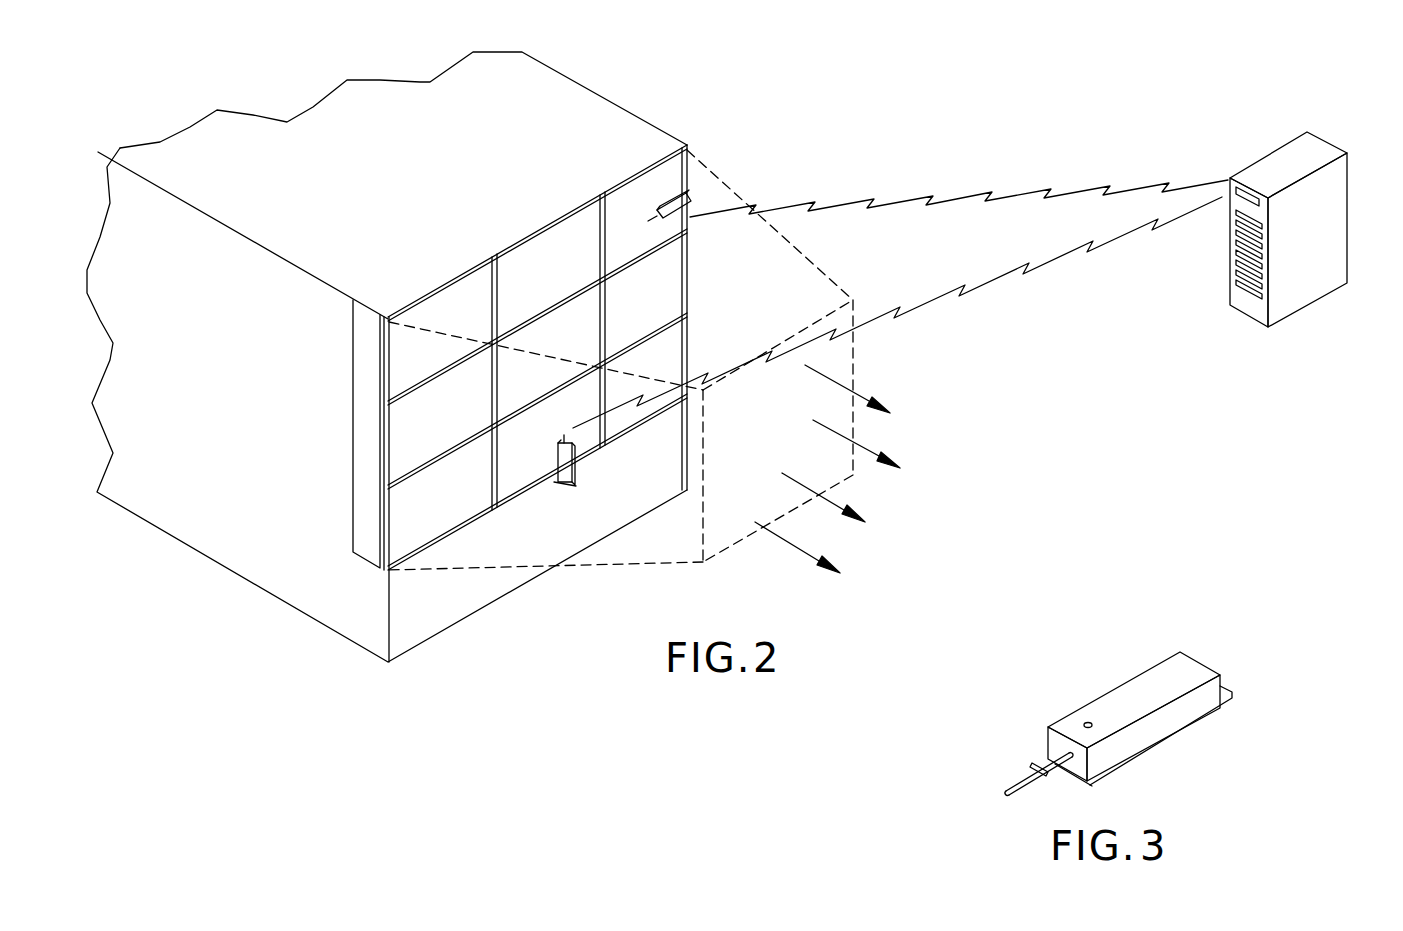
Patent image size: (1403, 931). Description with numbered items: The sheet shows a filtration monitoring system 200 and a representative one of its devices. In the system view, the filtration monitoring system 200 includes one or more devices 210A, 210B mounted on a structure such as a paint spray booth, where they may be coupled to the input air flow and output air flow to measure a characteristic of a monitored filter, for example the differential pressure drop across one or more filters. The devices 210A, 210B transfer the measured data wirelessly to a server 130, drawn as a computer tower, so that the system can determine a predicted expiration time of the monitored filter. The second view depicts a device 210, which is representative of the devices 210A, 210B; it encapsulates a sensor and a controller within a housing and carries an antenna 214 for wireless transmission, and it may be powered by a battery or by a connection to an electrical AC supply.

In FIG. 2, the filtration monitoring system 200 is at (937, 158).
In FIG. 2, the device 210A is at (683, 200).
In FIG. 2, the device 210B is at (572, 482).
In FIG. 2, the server 130 is at (1350, 237).
In FIG. 3, the device 210 is at (1201, 658).
In FIG. 3, the antenna 214 is at (1012, 780).